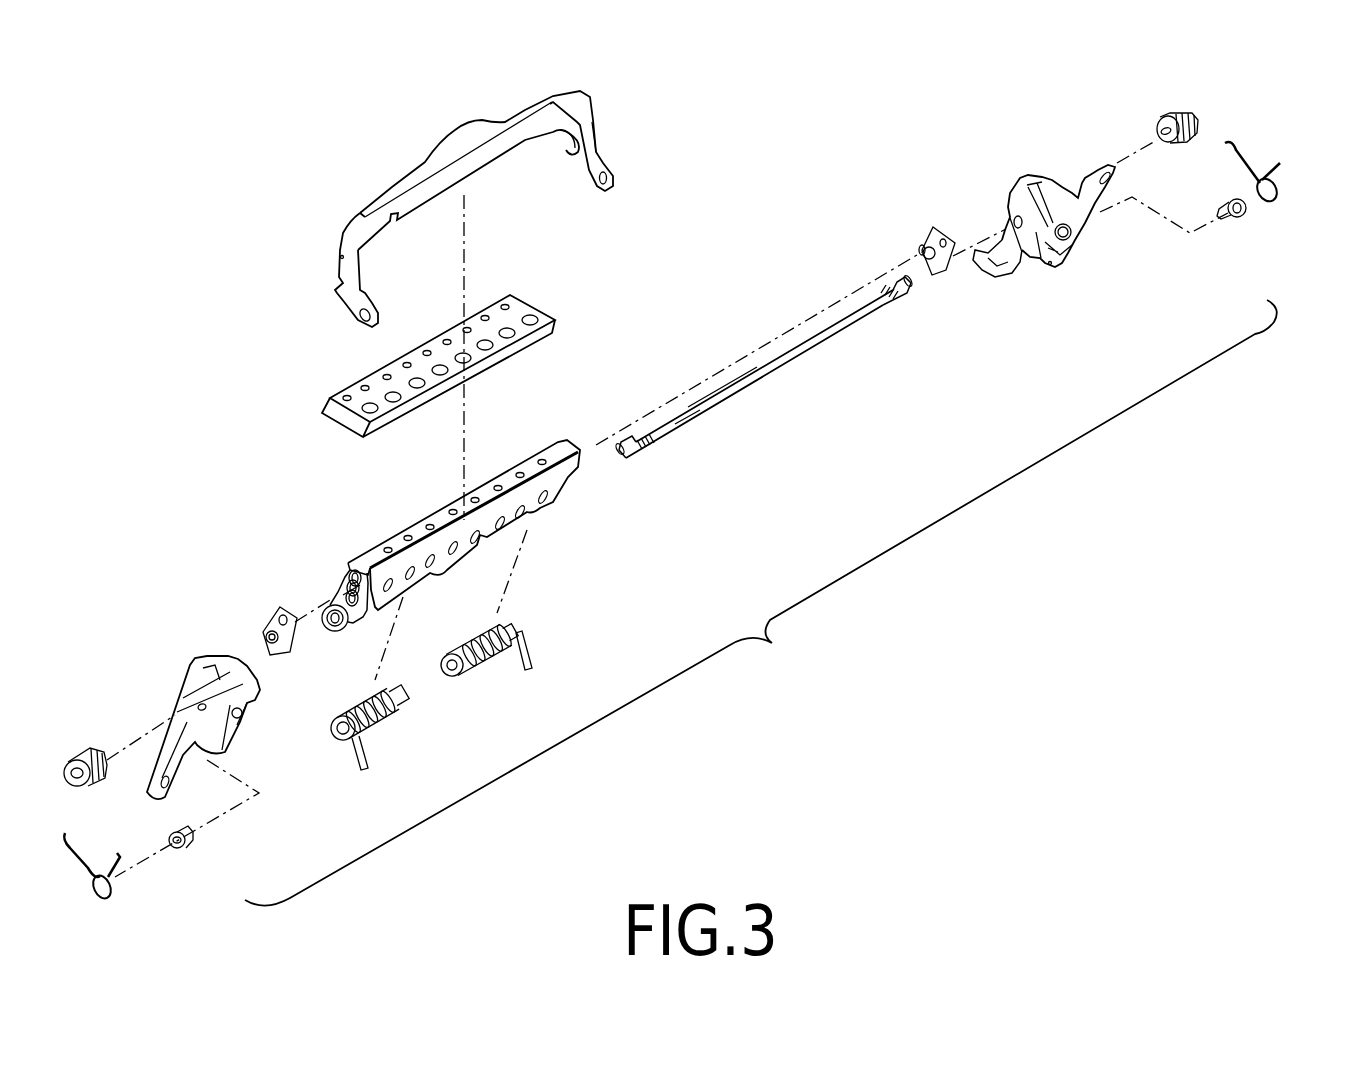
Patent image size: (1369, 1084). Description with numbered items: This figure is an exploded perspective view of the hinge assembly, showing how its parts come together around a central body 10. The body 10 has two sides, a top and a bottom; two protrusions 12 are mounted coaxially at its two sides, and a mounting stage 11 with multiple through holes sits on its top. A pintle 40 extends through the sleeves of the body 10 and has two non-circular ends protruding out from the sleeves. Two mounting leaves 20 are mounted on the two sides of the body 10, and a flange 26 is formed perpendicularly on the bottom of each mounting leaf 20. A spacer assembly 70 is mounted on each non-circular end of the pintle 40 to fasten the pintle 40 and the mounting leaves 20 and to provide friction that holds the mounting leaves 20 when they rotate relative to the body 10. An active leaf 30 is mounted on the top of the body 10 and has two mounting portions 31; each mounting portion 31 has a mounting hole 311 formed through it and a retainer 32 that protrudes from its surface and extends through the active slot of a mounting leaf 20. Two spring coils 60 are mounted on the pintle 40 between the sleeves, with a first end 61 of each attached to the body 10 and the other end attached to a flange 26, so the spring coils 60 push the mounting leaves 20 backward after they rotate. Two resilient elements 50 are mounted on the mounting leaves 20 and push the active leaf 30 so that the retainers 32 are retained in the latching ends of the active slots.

The body 10 is at (380, 525).
The mounting stage 11 is at (325, 408).
The protrusion 12 is at (268, 624).
The mounting leaf 20 is at (1030, 257).
The flange 26 is at (1000, 276).
The active leaf 30 is at (472, 130).
The mounting portion 31 is at (598, 152).
The retainer 32 is at (567, 152).
The mounting hole 311 is at (603, 185).
The pintle 40 is at (760, 380).
The resilient element 50 is at (1272, 143).
The spring coil 60 is at (490, 670).
The first end 61 is at (531, 665).
The spacer assembly 70 is at (1157, 108).